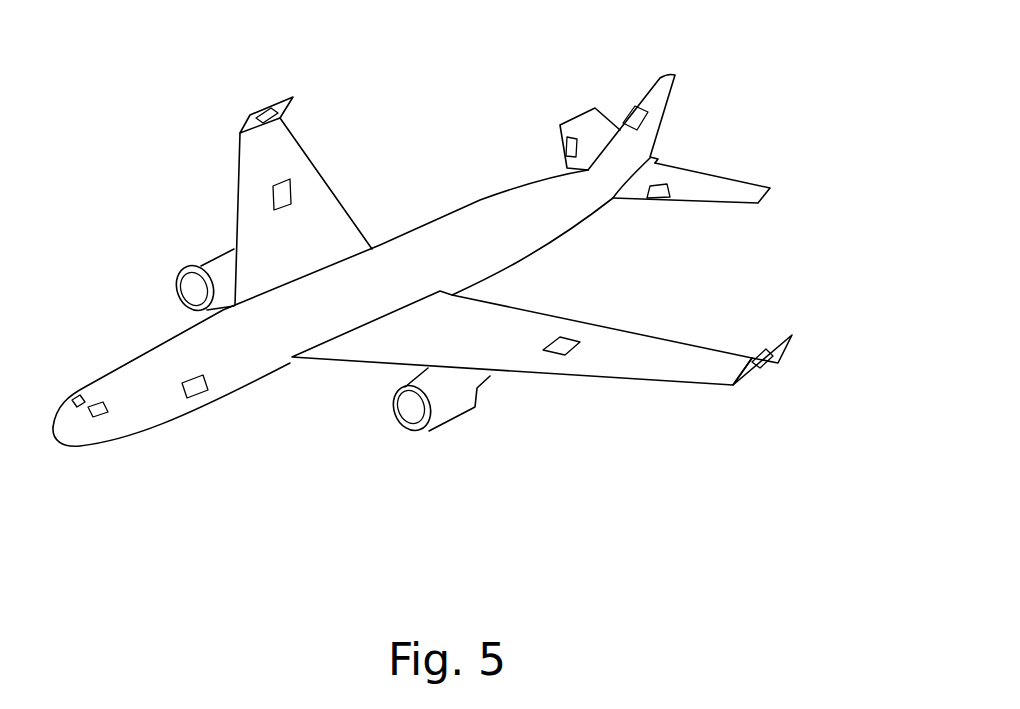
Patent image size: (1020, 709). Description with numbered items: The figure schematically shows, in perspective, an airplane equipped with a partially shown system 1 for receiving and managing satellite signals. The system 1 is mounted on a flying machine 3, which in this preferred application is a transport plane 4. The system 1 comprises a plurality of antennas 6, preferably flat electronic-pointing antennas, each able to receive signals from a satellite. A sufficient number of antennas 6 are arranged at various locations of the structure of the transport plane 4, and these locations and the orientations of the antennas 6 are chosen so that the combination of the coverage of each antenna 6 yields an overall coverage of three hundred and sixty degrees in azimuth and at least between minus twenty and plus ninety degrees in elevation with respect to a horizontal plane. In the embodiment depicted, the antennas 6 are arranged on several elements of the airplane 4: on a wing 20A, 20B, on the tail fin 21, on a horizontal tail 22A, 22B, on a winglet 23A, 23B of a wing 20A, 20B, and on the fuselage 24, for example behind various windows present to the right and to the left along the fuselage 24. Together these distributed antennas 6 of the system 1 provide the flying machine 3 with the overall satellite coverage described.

The system 1 is at (483, 264).
The flying machine 3 is at (305, 418).
The transport plane 4 is at (143, 319).
The antenna 6 is at (263, 107).
The wing 20A is at (550, 379).
The wing 20B is at (323, 177).
The tail fin 21 is at (663, 103).
The horizontal tail 22A is at (707, 182).
The horizontal tail 22B is at (580, 125).
The winglet 23A is at (780, 350).
The winglet 23B is at (281, 100).
The fuselage 24 is at (142, 437).